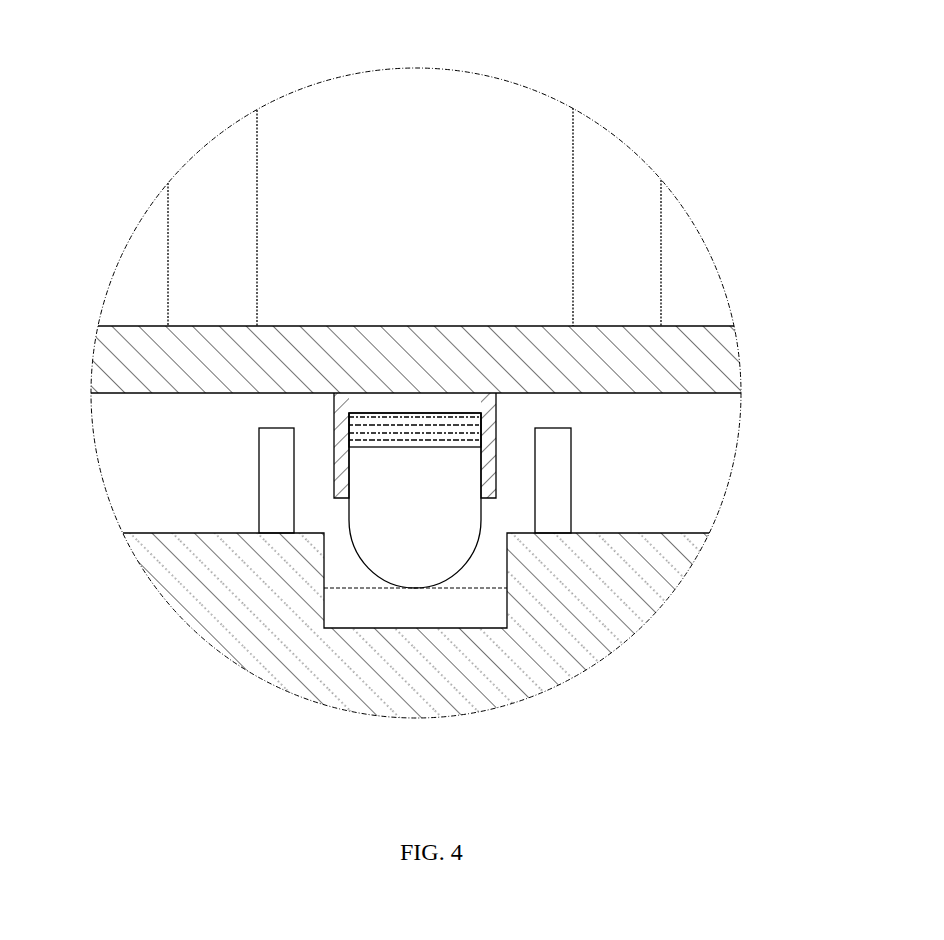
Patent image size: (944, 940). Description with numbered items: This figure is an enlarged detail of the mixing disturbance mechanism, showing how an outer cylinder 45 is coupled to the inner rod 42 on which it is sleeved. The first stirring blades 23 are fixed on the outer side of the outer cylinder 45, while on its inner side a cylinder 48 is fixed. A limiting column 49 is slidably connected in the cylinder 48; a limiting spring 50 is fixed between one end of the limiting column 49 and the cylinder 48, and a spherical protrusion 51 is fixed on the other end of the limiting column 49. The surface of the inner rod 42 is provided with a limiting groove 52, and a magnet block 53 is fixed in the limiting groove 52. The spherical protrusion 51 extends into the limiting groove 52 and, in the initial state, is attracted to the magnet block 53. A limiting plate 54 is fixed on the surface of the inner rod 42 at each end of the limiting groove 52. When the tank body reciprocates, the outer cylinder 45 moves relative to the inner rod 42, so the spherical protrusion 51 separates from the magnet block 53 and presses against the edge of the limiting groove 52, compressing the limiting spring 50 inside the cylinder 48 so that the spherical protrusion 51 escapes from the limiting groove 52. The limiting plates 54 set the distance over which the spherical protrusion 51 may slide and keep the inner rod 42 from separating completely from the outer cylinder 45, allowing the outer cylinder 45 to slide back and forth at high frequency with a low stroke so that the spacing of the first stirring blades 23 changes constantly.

The first stirring blade 23 is at (615, 272).
The inner rod 42 is at (278, 645).
The outer cylinder 45 is at (153, 347).
The cylinder 48 is at (498, 440).
The limiting column 49 is at (455, 468).
The limiting spring 50 is at (440, 410).
The spherical protrusion 51 is at (445, 568).
The limiting groove 52 is at (342, 572).
The magnet block 53 is at (372, 610).
The limiting plate 54 is at (272, 483).